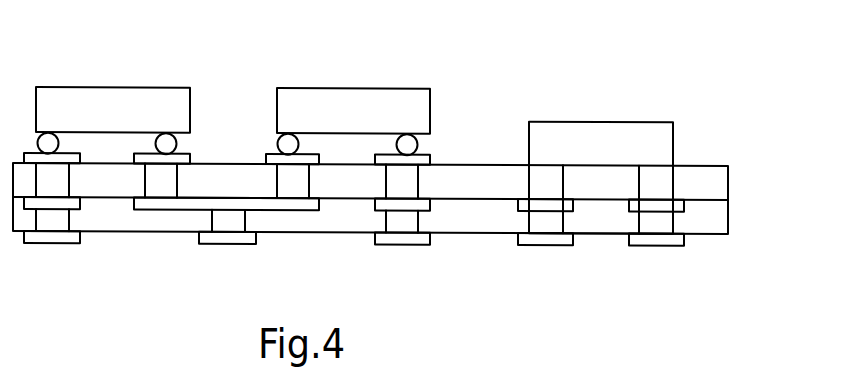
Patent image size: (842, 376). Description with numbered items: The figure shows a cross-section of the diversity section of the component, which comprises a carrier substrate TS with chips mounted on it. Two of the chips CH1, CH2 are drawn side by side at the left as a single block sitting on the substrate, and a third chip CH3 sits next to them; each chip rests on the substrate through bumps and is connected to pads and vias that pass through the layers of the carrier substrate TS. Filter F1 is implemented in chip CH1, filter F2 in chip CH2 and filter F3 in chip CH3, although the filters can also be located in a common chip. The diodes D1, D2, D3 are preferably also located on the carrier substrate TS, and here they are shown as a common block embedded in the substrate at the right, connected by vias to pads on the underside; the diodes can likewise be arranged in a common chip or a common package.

The chip CH1 is at (132, 85).
The chip CH2 is at (97, 93).
The chip CH3 is at (338, 97).
The diode D1 is at (644, 143).
The diode D2 is at (644, 143).
The diode D3 is at (605, 128).
The carrier substrate TS is at (753, 177).